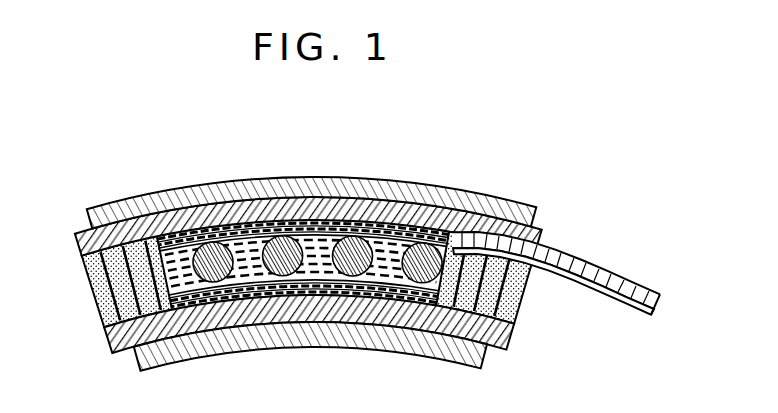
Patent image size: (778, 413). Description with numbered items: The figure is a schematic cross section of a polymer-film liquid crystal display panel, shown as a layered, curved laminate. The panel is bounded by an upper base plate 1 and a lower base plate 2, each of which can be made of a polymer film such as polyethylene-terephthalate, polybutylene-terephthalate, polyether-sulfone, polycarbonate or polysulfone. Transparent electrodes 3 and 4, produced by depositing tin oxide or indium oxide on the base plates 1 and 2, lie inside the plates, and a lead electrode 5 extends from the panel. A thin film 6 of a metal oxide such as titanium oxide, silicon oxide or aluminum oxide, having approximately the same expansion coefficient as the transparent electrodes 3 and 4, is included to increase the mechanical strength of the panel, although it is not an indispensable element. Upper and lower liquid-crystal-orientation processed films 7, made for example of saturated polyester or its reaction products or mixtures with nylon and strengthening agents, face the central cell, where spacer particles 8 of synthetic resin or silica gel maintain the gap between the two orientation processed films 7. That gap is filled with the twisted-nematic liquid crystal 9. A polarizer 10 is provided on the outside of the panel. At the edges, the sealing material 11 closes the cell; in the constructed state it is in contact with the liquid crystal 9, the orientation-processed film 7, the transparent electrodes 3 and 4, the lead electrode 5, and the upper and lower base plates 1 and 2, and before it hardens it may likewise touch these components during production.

The upper base plate 1 is at (556, 276).
The lower base plate 2 is at (315, 275).
The transparent electrode 3 is at (212, 215).
The transparent electrode 4 is at (366, 290).
The lead electrode 5 is at (650, 308).
The thin film 6 is at (414, 245).
The liquid-crystal-orientation processed film 7 is at (322, 226).
The spacer particles 8 is at (458, 240).
The twisted-nematic liquid crystal 9 is at (256, 232).
The polarizer 10 is at (116, 202).
The sealing material 11 is at (98, 296).